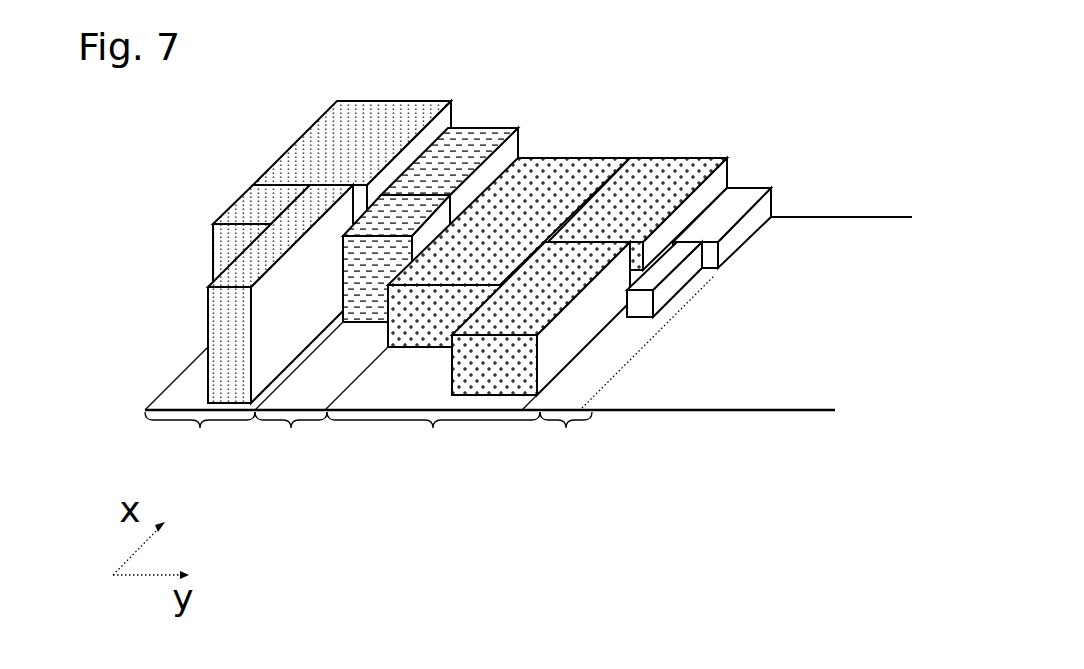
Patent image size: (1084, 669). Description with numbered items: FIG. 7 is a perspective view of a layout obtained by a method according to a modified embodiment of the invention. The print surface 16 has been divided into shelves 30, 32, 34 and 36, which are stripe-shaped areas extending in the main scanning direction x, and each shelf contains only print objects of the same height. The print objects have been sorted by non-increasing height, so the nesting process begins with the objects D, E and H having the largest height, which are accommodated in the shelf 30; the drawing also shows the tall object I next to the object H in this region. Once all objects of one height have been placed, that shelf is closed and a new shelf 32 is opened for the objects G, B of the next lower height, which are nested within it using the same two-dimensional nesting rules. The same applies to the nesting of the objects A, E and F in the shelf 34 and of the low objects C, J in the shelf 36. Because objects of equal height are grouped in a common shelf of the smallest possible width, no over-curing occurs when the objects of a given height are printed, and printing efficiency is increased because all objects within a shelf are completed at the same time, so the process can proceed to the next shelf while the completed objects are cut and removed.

The print surface 16 is at (853, 235).
The shelf 30 is at (200, 442).
The shelf 32 is at (291, 442).
The shelf 34 is at (433, 442).
The shelf 36 is at (564, 442).
The print object A is at (548, 165).
The print object B is at (367, 302).
The print object C is at (745, 200).
The print object D is at (372, 125).
The print object E is at (655, 178).
The print object F is at (587, 323).
The print object G is at (475, 143).
The print object H is at (220, 337).
The print object I is at (240, 210).
The print object J is at (677, 282).